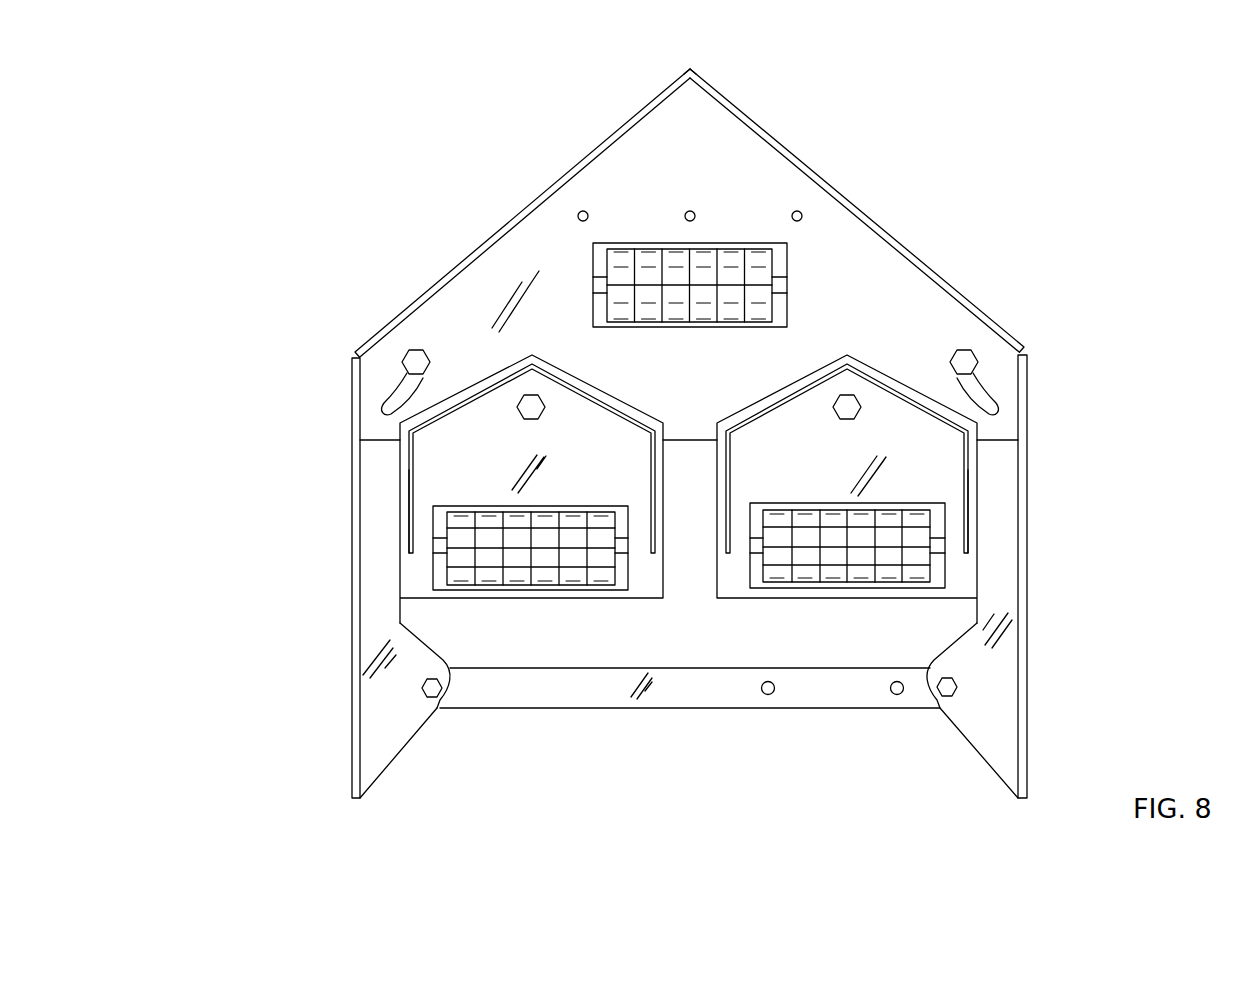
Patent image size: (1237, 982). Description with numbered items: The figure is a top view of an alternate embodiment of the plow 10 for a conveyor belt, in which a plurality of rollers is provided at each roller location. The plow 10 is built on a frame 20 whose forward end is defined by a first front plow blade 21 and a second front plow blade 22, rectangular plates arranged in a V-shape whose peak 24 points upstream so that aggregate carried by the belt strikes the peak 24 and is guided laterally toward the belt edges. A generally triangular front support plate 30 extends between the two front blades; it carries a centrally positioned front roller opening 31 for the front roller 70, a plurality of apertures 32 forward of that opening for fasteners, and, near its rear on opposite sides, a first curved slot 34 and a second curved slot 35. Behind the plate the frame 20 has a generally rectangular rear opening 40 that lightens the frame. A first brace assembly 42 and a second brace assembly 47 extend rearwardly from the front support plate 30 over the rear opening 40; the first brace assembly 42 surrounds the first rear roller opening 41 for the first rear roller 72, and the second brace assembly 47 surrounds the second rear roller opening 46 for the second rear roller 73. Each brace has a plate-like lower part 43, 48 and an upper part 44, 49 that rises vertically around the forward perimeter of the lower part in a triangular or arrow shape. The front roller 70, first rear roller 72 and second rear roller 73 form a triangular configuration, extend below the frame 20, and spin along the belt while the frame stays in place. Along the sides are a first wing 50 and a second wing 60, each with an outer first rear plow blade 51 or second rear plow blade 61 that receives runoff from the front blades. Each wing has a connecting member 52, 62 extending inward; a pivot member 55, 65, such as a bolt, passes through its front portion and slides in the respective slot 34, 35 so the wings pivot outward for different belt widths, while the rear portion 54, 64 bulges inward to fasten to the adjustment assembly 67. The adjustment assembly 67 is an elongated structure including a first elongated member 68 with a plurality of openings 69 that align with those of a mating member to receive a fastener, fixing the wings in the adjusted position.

The plow 10 is at (264, 148).
The frame 20 is at (915, 174).
The first front plow blade 21 is at (877, 221).
The second front plow blade 22 is at (547, 183).
The peak 24 is at (692, 70).
The front support plate 30 is at (455, 308).
The front roller opening 31 is at (593, 268).
The apertures 32 is at (582, 210).
The first curved slot 34 is at (984, 383).
The second curved slot 35 is at (396, 388).
The rear opening 40 is at (702, 652).
The first rear roller opening 41 is at (946, 565).
The first brace assembly 42 is at (852, 611).
The lower part 43 is at (978, 436).
The upper part 44 is at (970, 458).
The second rear roller opening 46 is at (433, 573).
The second brace assembly 47 is at (520, 611).
The lower part 48 is at (404, 497).
The upper part 49 is at (423, 420).
The first wing 50 is at (1042, 640).
The first rear plow blade 51 is at (1030, 665).
The connecting member 52 is at (1003, 528).
The rear portion 54 is at (995, 770).
The pivot member 55 is at (976, 356).
The second wing 60 is at (333, 594).
The second rear plow blade 61 is at (353, 572).
The connecting member 62 is at (365, 622).
The rear portion 64 is at (384, 773).
The pivot member 65 is at (410, 358).
The adjustment assembly 67 is at (652, 726).
The first elongated member 68 is at (583, 697).
The openings 69 is at (773, 694).
The front roller 70 is at (610, 260).
The first rear roller 72 is at (820, 573).
The second rear roller 73 is at (586, 573).